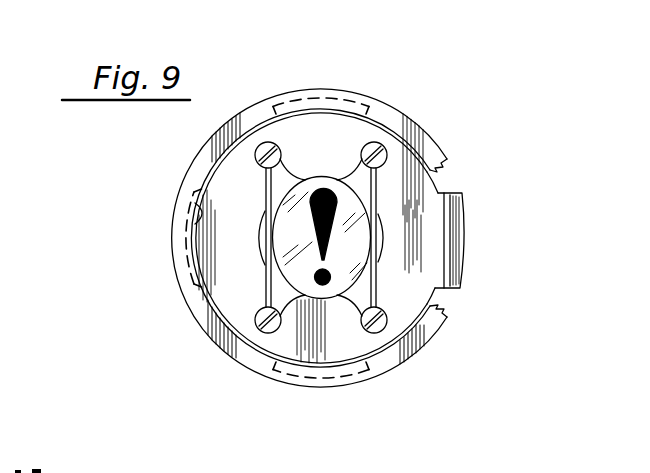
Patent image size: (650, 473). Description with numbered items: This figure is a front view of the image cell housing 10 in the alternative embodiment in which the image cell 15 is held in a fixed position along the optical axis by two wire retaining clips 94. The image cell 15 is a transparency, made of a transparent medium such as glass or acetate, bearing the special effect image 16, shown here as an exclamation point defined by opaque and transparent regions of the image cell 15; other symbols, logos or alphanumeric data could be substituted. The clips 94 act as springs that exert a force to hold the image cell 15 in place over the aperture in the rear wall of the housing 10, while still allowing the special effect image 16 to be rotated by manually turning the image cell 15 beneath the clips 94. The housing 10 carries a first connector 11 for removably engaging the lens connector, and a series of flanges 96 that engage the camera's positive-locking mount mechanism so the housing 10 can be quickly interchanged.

The image cell housing 10 is at (450, 348).
The first connector 11 is at (188, 226).
The image cell 15 is at (356, 242).
The special effect image 16 is at (327, 225).
The wire retaining clips 94 is at (362, 177).
The flanges 96 is at (465, 213).